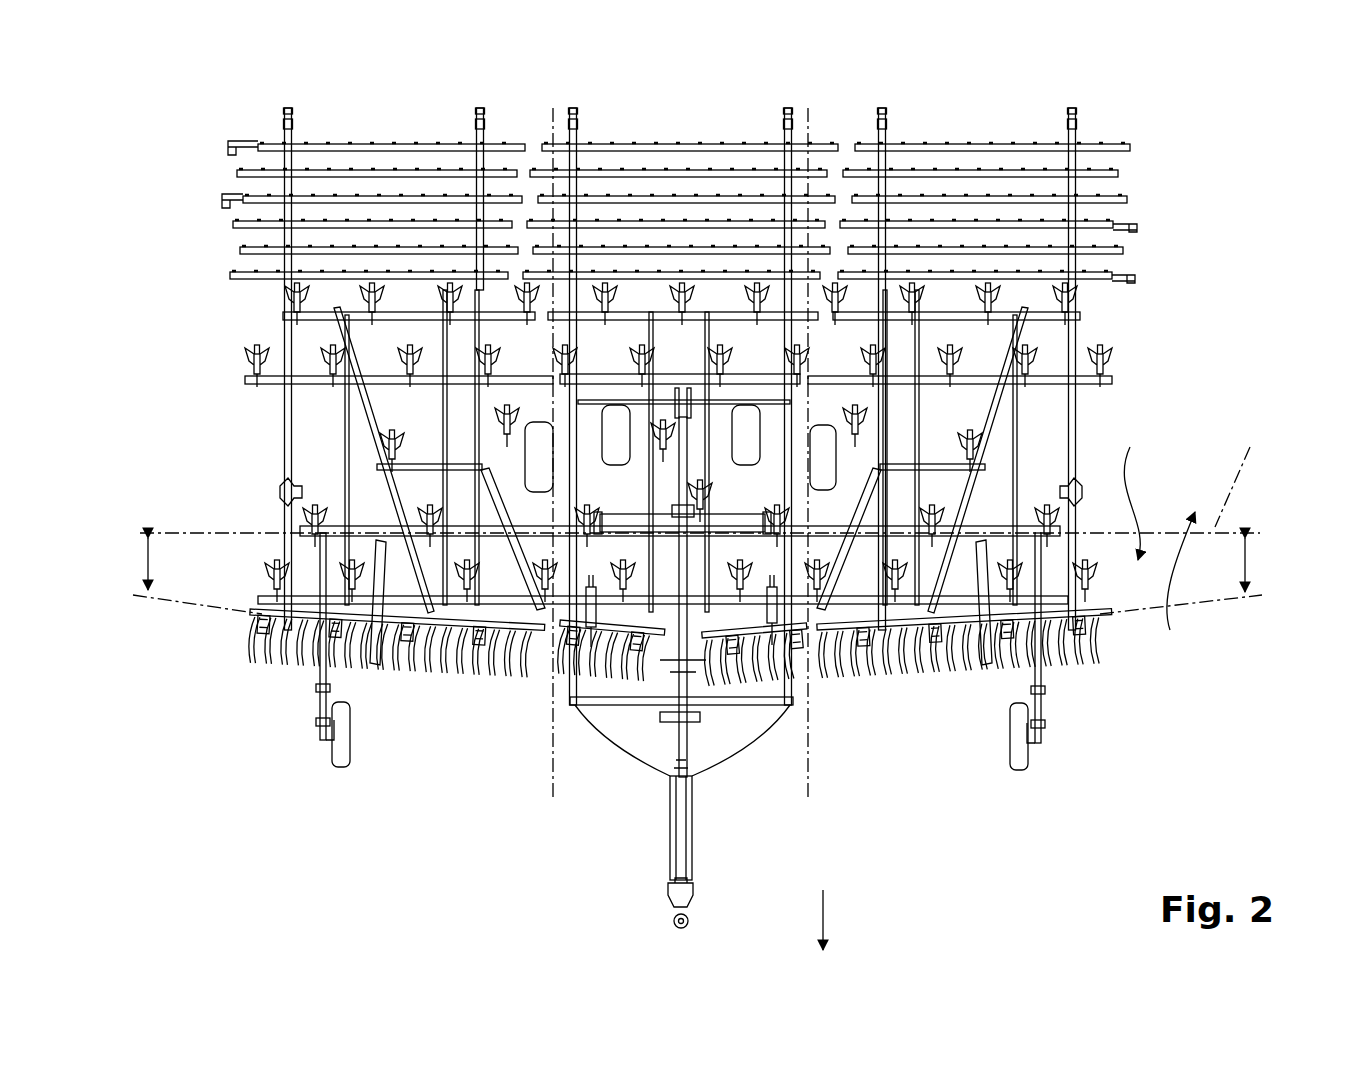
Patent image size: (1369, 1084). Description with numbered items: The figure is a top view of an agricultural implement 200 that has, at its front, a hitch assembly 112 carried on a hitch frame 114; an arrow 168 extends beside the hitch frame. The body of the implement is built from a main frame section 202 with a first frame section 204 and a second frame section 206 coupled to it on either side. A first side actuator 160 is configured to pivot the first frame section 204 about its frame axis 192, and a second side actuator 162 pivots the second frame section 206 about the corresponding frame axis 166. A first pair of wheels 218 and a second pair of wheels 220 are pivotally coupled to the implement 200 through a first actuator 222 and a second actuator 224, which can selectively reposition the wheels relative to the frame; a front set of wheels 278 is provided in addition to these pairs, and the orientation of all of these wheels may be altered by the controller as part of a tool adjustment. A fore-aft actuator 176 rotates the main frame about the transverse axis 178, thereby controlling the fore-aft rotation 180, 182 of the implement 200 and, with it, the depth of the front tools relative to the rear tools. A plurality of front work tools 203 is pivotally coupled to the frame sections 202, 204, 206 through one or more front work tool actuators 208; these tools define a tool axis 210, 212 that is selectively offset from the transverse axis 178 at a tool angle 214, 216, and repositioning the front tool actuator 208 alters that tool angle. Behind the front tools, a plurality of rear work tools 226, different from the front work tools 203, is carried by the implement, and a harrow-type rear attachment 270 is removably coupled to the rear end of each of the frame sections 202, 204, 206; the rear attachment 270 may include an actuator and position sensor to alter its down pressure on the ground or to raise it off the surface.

The implement 200 is at (1228, 150).
The first frame section 204 is at (553, 90).
The main frame section 202 is at (808, 90).
The second frame section 206 is at (1135, 90).
The rear attachment 270 is at (187, 133).
The second actuator 224 is at (575, 565).
The first actuator 222 is at (790, 565).
The rear work tools 226 is at (1040, 330).
The second pair of wheels 220 is at (538, 458).
The first pair of wheels 218 is at (838, 455).
The first side actuator 160 is at (585, 565).
The second side actuator 162 is at (775, 565).
The fore-aft actuator 176 is at (683, 665).
The front work tool actuator 208 is at (772, 630).
The front work tools 203 is at (405, 702).
The front set of wheels 278 is at (338, 748).
The hitch frame 114 is at (694, 835).
The hitch assembly 112 is at (660, 905).
The direction of travel 168 is at (828, 920).
The frame axis 192 is at (553, 762).
The frame axis 166 is at (808, 760).
The tool angle 214 is at (147, 565).
The tool angle 216 is at (1250, 565).
The tool axis 210 is at (190, 610).
The tool axis 212 is at (1200, 615).
The fore-aft rotation 180 is at (1130, 487).
The transverse axis 178 is at (1248, 471).
The fore-aft rotation 182 is at (1171, 586).